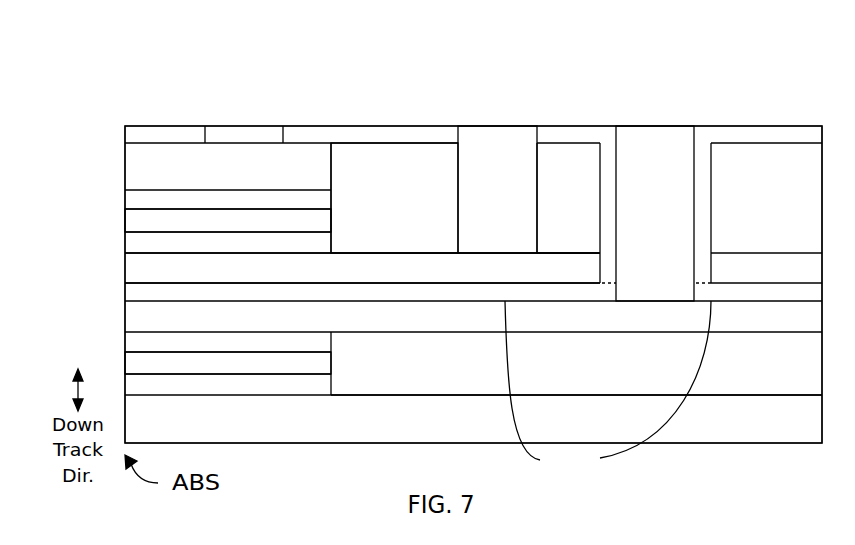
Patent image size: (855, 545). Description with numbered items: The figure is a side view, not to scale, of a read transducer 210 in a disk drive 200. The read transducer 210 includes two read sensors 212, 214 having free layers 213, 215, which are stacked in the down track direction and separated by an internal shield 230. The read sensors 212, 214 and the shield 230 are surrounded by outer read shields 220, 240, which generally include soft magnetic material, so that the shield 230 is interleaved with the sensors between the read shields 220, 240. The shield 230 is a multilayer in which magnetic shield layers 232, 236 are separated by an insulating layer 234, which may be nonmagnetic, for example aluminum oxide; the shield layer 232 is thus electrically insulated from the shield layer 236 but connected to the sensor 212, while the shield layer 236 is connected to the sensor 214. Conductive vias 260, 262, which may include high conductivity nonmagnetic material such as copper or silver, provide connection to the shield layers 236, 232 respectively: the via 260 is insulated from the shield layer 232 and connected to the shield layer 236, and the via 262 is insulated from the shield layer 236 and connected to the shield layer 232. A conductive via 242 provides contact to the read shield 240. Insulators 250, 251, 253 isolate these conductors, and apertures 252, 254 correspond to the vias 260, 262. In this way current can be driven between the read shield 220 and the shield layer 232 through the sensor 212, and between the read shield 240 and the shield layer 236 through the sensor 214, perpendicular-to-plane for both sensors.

The disk drive 200 is at (485, 59).
The read transducer 210 is at (473, 284).
The read sensor 212 is at (97, 361).
The free layer 213 is at (228, 362).
The read sensor 214 is at (98, 204).
The free layer 215 is at (228, 220).
The read shield 220 is at (473, 413).
The shield 230 is at (104, 290).
The shield layer 232 is at (473, 316).
The insulating layer 234 is at (608, 385).
The shield layer 236 is at (473, 268).
The read shield 240 is at (228, 198).
The conductive via 242 is at (252, 125).
The insulator 250 is at (576, 366).
The insulator 251 is at (576, 198).
The aperture 252 is at (489, 107).
The insulator 253 is at (362, 125).
The aperture 254 is at (655, 103).
The conductive via 260 is at (497, 189).
The conductive via 262 is at (655, 213).